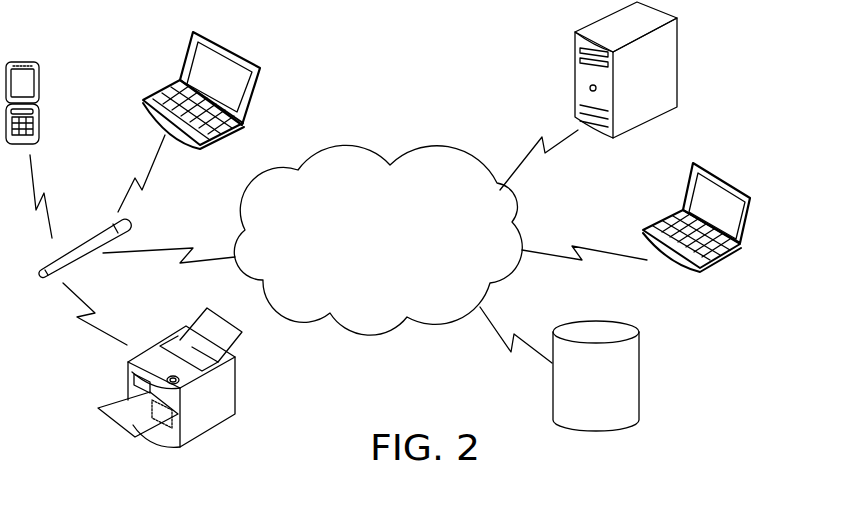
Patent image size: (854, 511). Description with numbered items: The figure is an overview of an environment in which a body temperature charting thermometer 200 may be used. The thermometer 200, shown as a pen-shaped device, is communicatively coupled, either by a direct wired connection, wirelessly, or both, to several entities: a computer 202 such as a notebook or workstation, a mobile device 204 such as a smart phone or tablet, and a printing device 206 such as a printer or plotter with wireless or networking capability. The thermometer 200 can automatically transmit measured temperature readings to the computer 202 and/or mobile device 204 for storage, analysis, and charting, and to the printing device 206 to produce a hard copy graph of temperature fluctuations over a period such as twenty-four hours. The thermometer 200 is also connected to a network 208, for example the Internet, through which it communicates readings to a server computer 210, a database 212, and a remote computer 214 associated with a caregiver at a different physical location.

The thermometer 200 is at (130, 228).
The computer 202 is at (258, 92).
The mobile device 204 is at (40, 82).
The printing device 206 is at (240, 372).
The network 208 is at (438, 200).
The server computer 210 is at (572, 88).
The database 212 is at (640, 362).
The remote computer 214 is at (702, 163).